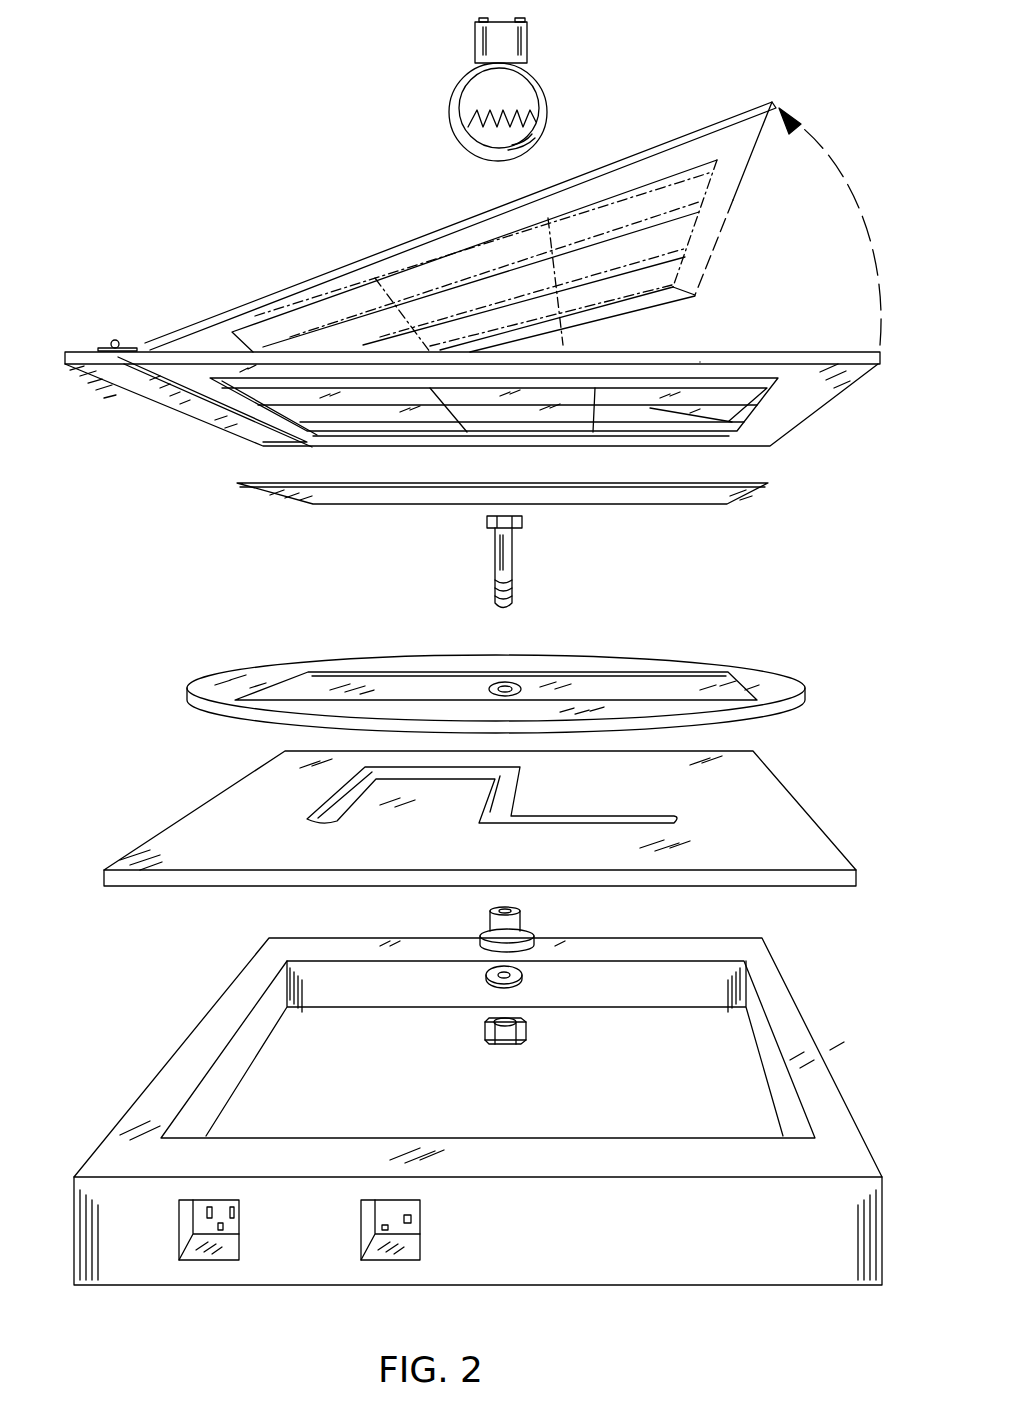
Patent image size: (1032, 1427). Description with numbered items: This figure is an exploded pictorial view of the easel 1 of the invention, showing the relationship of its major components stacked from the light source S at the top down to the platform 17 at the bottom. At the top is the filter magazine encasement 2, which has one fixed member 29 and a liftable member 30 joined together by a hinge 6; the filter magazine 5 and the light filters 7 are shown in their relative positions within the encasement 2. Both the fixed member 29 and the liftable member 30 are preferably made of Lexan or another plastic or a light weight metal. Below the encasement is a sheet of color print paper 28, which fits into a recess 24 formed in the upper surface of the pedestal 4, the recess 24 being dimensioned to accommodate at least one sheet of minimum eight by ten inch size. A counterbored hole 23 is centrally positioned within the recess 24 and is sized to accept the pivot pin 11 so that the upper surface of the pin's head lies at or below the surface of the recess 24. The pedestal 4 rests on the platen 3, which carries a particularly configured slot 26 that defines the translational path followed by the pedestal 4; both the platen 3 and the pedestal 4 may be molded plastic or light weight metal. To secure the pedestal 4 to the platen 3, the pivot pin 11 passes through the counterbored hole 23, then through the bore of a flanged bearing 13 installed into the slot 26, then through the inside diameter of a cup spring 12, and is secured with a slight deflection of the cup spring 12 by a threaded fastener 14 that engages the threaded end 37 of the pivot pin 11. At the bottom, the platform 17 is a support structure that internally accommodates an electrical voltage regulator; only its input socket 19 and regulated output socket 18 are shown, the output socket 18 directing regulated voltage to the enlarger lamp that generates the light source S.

The light source (bulb) S is at (453, 88).
The display device assembly 1 is at (310, 224).
The filter magazine encasement 2 is at (670, 303).
The hinge 6 is at (117, 342).
The liftable member 30 is at (840, 397).
The fixed member 29 is at (87, 372).
The light filters 7 is at (717, 412).
The filter magazine 5 is at (650, 408).
The sheet of color print paper 28 is at (727, 503).
The pivot pin 11 is at (513, 547).
The threaded end 37 is at (513, 598).
The pedestal 4 is at (790, 668).
The recess 24 is at (387, 688).
The counterbored hole 23 is at (493, 685).
The platen 3 is at (812, 818).
The slot 26 is at (320, 810).
The flanged bearing 13 is at (521, 908).
The cup spring 12 is at (521, 975).
The threaded fastener 14 is at (526, 1028).
The platform 17 is at (847, 1099).
The input socket 19 is at (216, 1246).
The electrical socket 18 is at (368, 1260).